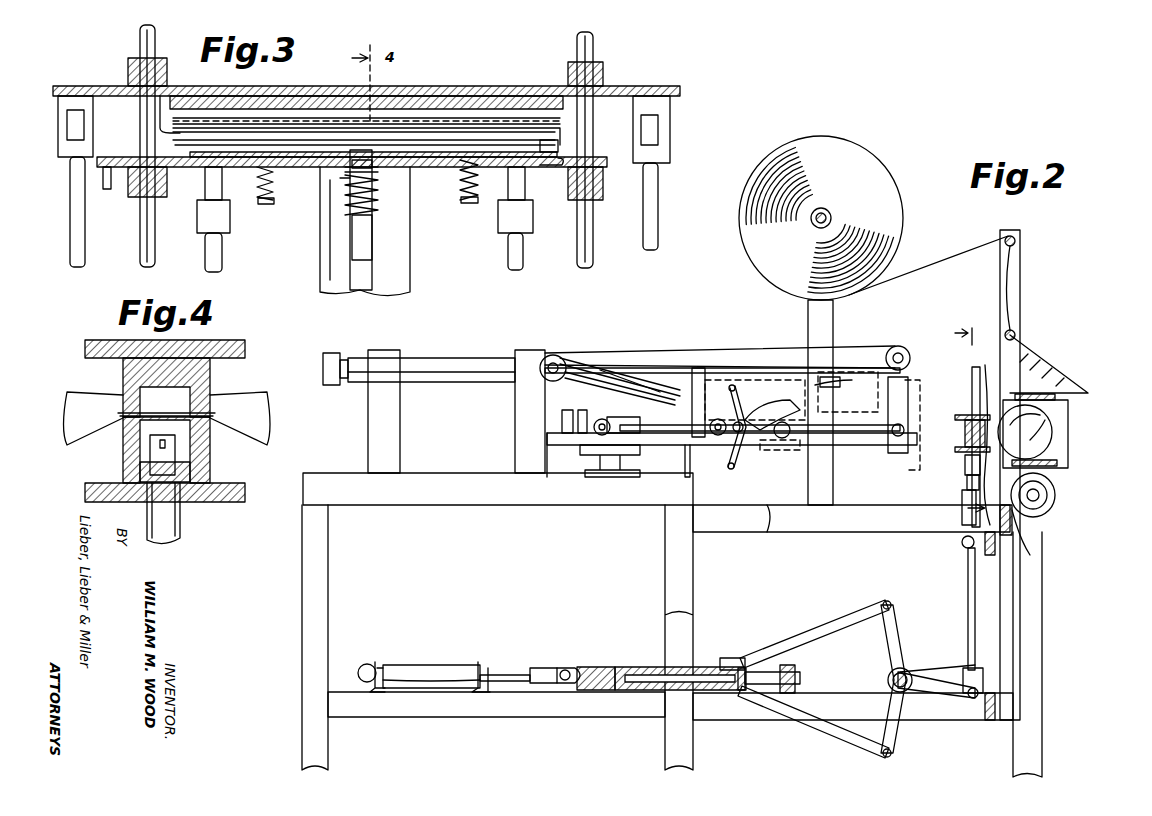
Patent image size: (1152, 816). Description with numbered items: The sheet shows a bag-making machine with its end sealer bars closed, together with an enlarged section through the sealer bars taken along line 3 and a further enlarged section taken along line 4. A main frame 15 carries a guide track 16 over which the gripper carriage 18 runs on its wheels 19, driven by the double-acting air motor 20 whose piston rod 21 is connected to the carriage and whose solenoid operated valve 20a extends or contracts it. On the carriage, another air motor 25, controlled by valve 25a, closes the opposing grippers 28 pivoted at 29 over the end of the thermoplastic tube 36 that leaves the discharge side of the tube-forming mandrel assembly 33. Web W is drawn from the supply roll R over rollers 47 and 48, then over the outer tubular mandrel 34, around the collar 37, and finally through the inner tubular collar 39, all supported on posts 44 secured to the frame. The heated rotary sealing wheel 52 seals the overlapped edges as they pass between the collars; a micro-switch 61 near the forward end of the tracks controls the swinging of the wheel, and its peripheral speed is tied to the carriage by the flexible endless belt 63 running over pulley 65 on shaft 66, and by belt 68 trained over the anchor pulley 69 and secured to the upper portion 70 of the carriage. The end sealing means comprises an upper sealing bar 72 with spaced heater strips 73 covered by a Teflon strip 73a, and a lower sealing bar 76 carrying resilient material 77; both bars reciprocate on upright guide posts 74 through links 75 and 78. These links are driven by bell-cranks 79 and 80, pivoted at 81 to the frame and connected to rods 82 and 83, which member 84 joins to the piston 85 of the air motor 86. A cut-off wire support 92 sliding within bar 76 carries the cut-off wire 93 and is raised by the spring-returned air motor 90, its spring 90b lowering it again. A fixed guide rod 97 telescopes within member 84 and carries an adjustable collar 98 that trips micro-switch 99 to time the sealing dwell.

In FIG. 2, the supply roll R is at (893, 208).
In FIG. 2, the web W is at (935, 268).
In FIG. 2, the section line 3— 3 is at (960, 415).
In FIG. 3, the section line 4— 4 is at (372, 222).
In FIG. 2, the main frame 15 is at (335, 490).
In FIG. 4, the guide track 16 is at (212, 463).
In FIG. 2, the guide track 16 is at (675, 446).
In FIG. 2, the gripper carriage 18 is at (690, 392).
In FIG. 2, the wheels 19 is at (600, 418).
In FIG. 2, the double-acting air motor 20 is at (445, 368).
In FIG. 2, the solenoid operated valve 20a is at (332, 355).
In FIG. 2, the piston rod 21 is at (628, 380).
In FIG. 2, the double-acting air motor 25 is at (620, 417).
In FIG. 2, the solenoid-operated valve 25a is at (560, 428).
In FIG. 2, the grippers 28 is at (770, 412).
In FIG. 2, the pivot 29 is at (744, 445).
In FIG. 2, the tube-forming mandrel assembly 33 is at (1085, 430).
In FIG. 2, the outer tubular mandrel 34 is at (1065, 390).
In FIG. 4, the thermoplastic tube 36 is at (255, 410).
In FIG. 2, the thermoplastic tube 36 is at (988, 372).
In FIG. 2, the collar 37 is at (1068, 447).
In FIG. 2, the tubular collar 39 is at (1035, 393).
In FIG. 2, the posts 44 is at (1040, 530).
In FIG. 2, the roller 47 is at (1016, 241).
In FIG. 2, the roller 48 is at (1017, 333).
In FIG. 2, the heated rotary sealing wheel 52 is at (1048, 490).
In FIG. 2, the micro-switch 61 is at (880, 382).
In FIG. 2, the flexible endless belt 63 is at (595, 362).
In FIG. 2, the pulley 65 is at (548, 357).
In FIG. 2, the shaft 66 is at (558, 360).
In FIG. 2, the flexible belt 68 is at (745, 352).
In FIG. 2, the anchor pulley 69 is at (908, 352).
In FIG. 2, the upper portion of the carriage 70 is at (698, 366).
In FIG. 3, the upper sealing bar 72 is at (680, 90).
In FIG. 4, the upper sealing bar 72 is at (245, 350).
In FIG. 2, the upper sealing bar 72 is at (960, 415).
In FIG. 3, the heater strips 73 is at (505, 130).
In FIG. 4, the heater strips 73 is at (128, 385).
In FIG. 3, the Teflon strip 73a is at (535, 131).
In FIG. 4, the Teflon strip 73a is at (120, 398).
In FIG. 3, the upright guide posts 74 is at (140, 38).
In FIG. 2, the upright guide posts 74 is at (972, 370).
In FIG. 3, the links 75 is at (80, 228).
In FIG. 3, the lower sealing bar 76 is at (604, 168).
In FIG. 2, the lower sealing bar 76 is at (965, 465).
In FIG. 3, the resilient material 77 is at (490, 124).
In FIG. 4, the resilient material 77 is at (123, 425).
In FIG. 3, the links 78 is at (222, 256).
In FIG. 2, the links 78 is at (968, 637).
In FIG. 2, the bell-crank 79 is at (930, 672).
In FIG. 2, the bell-crank 80 is at (905, 732).
In FIG. 2, the pivot 81 is at (885, 680).
In FIG. 2, the rod 82 is at (828, 628).
In FIG. 2, the rod 83 is at (830, 736).
In FIG. 2, the member 84 is at (585, 668).
In FIG. 2, the piston 85 is at (505, 675).
In FIG. 2, the double-acting solenoid-operated air motor 86 is at (425, 665).
In FIG. 3, the single-acting spring-returned air motor 90 is at (372, 275).
In FIG. 4, the single-acting spring-returned air motor 90 is at (178, 525).
In FIG. 2, the single-acting spring-returned air motor 90 is at (960, 520).
In FIG. 3, the spring 90b is at (348, 192).
In FIG. 3, the cut-off wire support 92 is at (420, 166).
In FIG. 4, the cut-off wire support 92 is at (138, 470).
In FIG. 3, the cut-off wire 93 is at (440, 150).
In FIG. 4, the cut-off wire 93 is at (152, 438).
In FIG. 2, the fixed guide rod 97 is at (622, 675).
In FIG. 2, the collar 98 is at (755, 665).
In FIG. 2, the micro-switch 99 is at (740, 658).